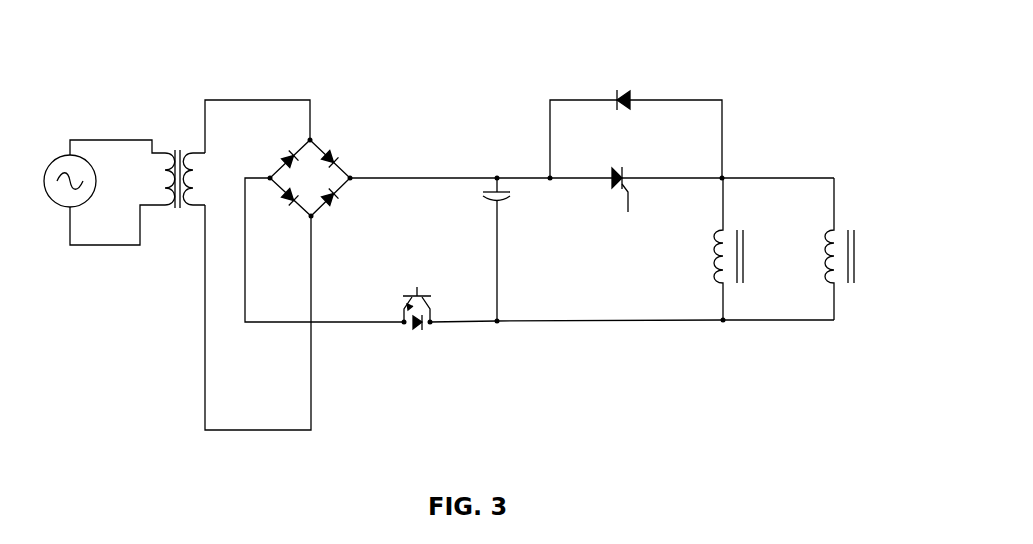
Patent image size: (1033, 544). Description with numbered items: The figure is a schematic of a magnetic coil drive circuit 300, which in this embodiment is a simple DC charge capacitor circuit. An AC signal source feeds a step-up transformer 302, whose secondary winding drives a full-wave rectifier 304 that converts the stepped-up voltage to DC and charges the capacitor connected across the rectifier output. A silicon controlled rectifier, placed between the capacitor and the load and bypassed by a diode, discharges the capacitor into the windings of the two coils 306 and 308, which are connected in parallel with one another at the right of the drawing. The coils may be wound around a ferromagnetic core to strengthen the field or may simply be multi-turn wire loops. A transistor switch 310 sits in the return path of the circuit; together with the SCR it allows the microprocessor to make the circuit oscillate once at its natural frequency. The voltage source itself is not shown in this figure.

The magnetic coil drive circuit 300 is at (172, 307).
The step-up transformer 302 is at (172, 234).
The full-wave rectifier 304 is at (338, 163).
The coil 306 is at (782, 202).
The coil 308 is at (910, 202).
The transistor switch 310 is at (410, 330).